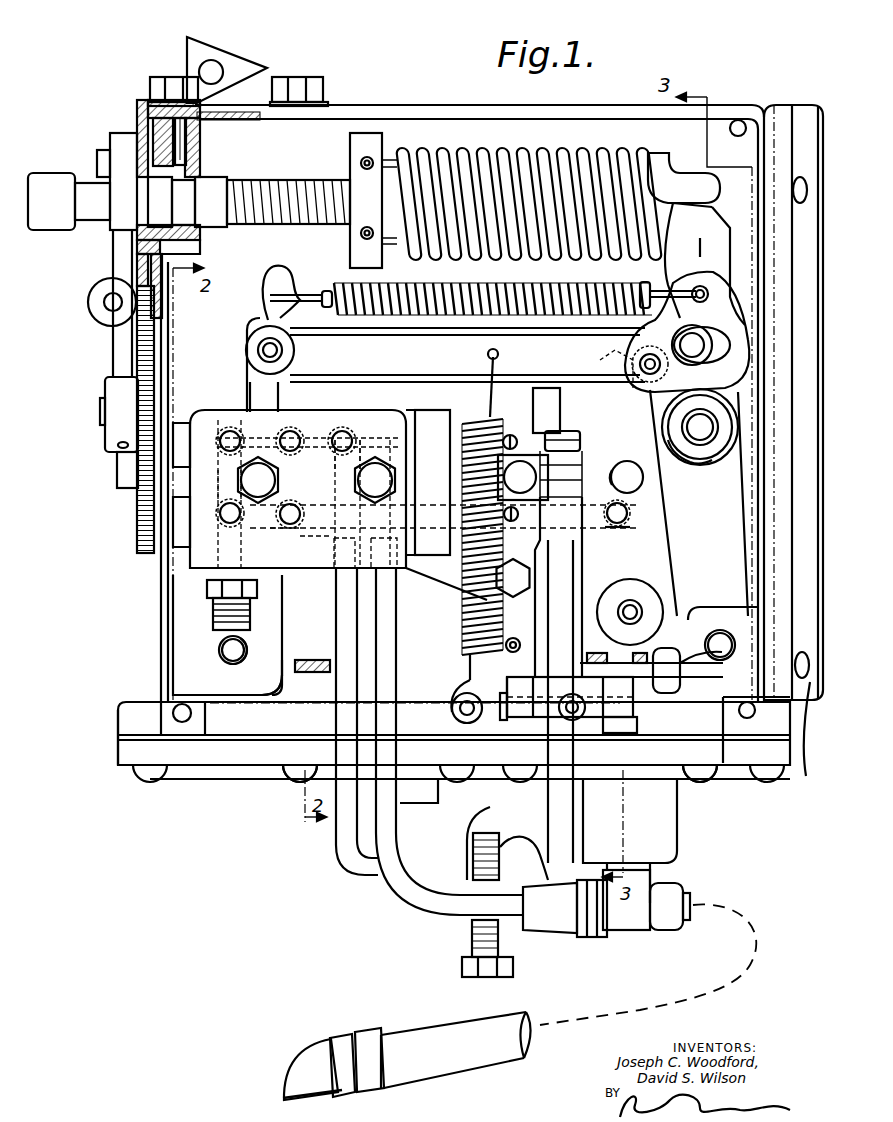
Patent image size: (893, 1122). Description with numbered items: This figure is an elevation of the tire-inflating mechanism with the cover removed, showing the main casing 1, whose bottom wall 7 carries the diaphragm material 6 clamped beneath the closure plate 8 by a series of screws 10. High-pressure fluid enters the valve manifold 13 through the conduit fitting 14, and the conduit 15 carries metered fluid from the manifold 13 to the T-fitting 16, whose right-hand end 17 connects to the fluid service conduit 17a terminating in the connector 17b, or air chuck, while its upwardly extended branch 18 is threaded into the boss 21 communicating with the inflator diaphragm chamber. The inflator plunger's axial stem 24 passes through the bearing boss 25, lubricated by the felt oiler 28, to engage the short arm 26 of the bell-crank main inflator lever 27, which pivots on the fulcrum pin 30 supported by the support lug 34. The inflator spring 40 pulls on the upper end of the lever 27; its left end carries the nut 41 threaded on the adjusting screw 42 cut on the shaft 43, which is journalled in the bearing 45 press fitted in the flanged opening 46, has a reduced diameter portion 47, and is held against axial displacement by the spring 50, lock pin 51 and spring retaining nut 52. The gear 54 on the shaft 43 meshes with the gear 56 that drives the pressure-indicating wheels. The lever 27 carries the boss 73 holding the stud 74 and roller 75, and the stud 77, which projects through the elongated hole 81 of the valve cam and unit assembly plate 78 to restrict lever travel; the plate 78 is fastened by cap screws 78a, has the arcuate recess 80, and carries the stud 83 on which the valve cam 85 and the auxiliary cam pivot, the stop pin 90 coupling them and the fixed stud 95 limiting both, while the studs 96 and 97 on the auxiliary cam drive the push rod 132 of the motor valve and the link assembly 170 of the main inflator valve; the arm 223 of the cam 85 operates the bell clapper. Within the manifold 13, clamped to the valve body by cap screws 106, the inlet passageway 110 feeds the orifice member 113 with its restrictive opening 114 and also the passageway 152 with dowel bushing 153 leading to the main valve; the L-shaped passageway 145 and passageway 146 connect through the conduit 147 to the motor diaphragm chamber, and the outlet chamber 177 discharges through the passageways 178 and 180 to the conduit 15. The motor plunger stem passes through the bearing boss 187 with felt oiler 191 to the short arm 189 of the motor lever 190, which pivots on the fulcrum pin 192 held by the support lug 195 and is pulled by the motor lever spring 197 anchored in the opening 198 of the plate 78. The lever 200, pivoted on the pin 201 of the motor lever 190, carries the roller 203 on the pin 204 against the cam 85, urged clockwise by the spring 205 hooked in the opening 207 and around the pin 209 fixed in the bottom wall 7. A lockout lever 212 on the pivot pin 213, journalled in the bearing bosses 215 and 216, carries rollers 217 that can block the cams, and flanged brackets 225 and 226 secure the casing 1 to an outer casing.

The main casing 1 is at (158, 631).
The diaphragm material 6 is at (120, 738).
The bottom wall 7 is at (209, 718).
The closure plate 8 is at (215, 758).
The screws 10 is at (300, 779).
The valve manifold 13 is at (318, 416).
The conduit fitting 14 is at (213, 627).
The conduit 15 is at (393, 657).
The T-fitting 16 is at (628, 931).
The right-hand end 17 is at (686, 895).
The fluid service conduit 17a is at (432, 1034).
The connector 17b is at (310, 1060).
The upwardly extended branch 18 is at (652, 876).
The boss 21 is at (670, 826).
The axial stem 24 is at (651, 617).
The bearing boss 25 is at (644, 682).
The short arm 26 is at (681, 640).
The main inflator lever 27 is at (732, 251).
The felt oiler 28 is at (686, 661).
The fulcrum pin 30 is at (732, 641).
The support lug 34 is at (729, 608).
The inflator spring 40 is at (562, 152).
The nut 41 is at (360, 250).
The adjusting screw 42 is at (268, 178).
The shaft 43 is at (187, 202).
The bearing 45 is at (201, 237).
The flanged opening 46 is at (160, 254).
The reduced diameter portion 47 is at (184, 193).
The spring 50 is at (182, 145).
The lock pin 51 is at (186, 153).
The spring retaining nut 52 is at (200, 101).
The gear 54 is at (137, 152).
The gear 56 is at (138, 526).
The boss 73 is at (697, 465).
The stud 74 is at (703, 438).
The roller 75 is at (688, 463).
The stud 77 is at (704, 331).
The valve cam and unit assembly plate 78 is at (625, 302).
The cap screws 78a is at (513, 578).
The arcuate recess 80 is at (686, 396).
The elongated hole 81 is at (716, 357).
The stud 83 is at (631, 600).
The valve cam 85 is at (535, 397).
The stop pin 90 is at (598, 409).
The stud 95 is at (630, 498).
The stud 96 is at (630, 470).
The stud 97 is at (617, 527).
The cap screws 106 is at (264, 478).
The passageway 110 is at (223, 471).
The orifice member 113 is at (241, 443).
The axial restrictive opening 114 is at (228, 443).
The push rod 132 is at (457, 437).
The L-shaped passageway 145 is at (292, 437).
The passageway 146 is at (348, 482).
The conduit 147 is at (338, 832).
The passageway 152 is at (282, 515).
The dowel bushing 153 is at (218, 513).
The link assembly 170 is at (512, 523).
The outlet chamber 177 is at (286, 530).
The passageway 178 is at (310, 537).
The passageway 180 is at (393, 520).
The bearing boss 187 is at (283, 698).
The short arm 189 is at (301, 660).
The motor lever 190 is at (244, 384).
The felt oiler 191 is at (280, 667).
The fulcrum pin 192 is at (246, 651).
The support lug 195 is at (220, 652).
The motor lever spring 197 is at (410, 290).
The opening 198 is at (702, 288).
The lever 200 is at (467, 355).
The pin 201 is at (262, 350).
The roller 203 is at (683, 338).
The pin 204 is at (647, 352).
The spring 205 is at (462, 609).
The opening 207 is at (490, 356).
The pin 209 is at (452, 712).
The pivoted lever 212 is at (556, 785).
The pivot pin 213 is at (598, 722).
The bearing boss 215 is at (637, 721).
The bearing boss 216 is at (508, 727).
The rollers 217 is at (508, 435).
The arm 223 is at (535, 611).
The flanged bracket 225 is at (804, 742).
The flanged bracket 226 is at (235, 60).